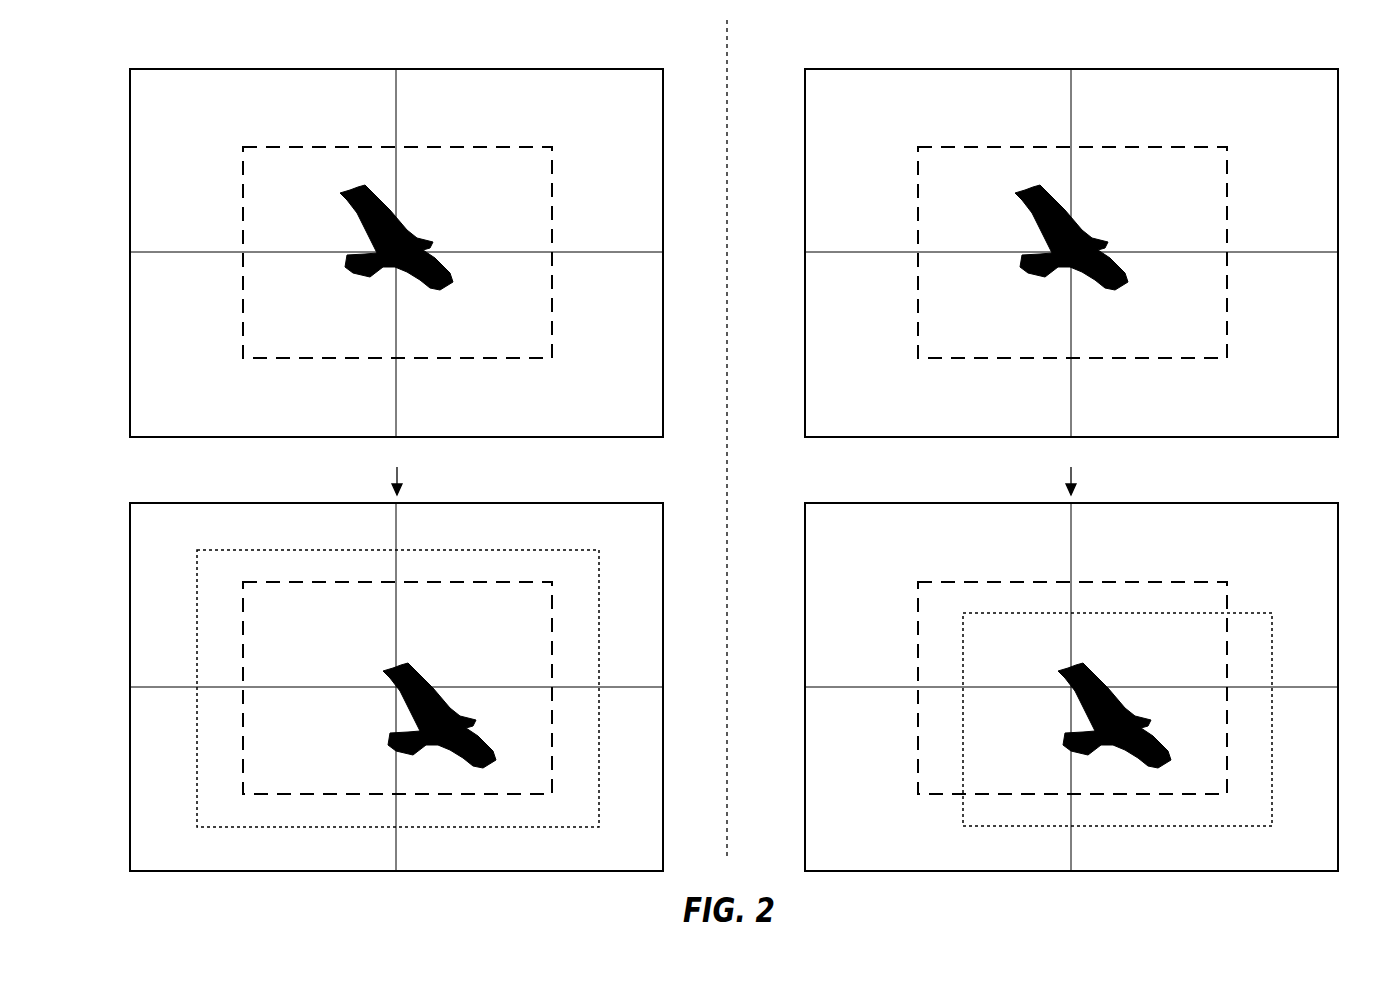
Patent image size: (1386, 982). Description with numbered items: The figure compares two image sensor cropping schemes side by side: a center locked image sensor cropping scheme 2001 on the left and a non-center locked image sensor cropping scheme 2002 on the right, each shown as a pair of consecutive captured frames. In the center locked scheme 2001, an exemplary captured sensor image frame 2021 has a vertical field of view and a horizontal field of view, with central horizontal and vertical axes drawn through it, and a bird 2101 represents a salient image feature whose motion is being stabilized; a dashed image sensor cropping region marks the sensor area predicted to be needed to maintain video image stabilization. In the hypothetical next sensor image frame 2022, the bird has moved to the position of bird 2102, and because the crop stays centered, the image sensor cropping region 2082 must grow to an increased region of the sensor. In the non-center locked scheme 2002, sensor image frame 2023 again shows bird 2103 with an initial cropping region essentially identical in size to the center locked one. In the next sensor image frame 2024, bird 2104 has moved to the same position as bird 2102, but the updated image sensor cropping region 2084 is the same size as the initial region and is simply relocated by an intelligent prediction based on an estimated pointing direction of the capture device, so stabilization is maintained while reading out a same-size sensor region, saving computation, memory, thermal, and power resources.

The center locked image sensor cropping scheme 2001 is at (384, 452).
The non-center locked image sensor cropping scheme 2002 is at (1065, 452).
The sensor image frame 2021 is at (398, 238).
The sensor image frame 2022 is at (398, 672).
The sensor image frame 2023 is at (1073, 238).
The sensor image frame 2024 is at (1073, 672).
The image sensor cropping region 2082 is at (395, 674).
The image sensor cropping region 2084 is at (1117, 705).
The bird 2101 is at (380, 229).
The bird 2102 is at (422, 707).
The bird 2103 is at (1055, 229).
The bird 2104 is at (1097, 707).